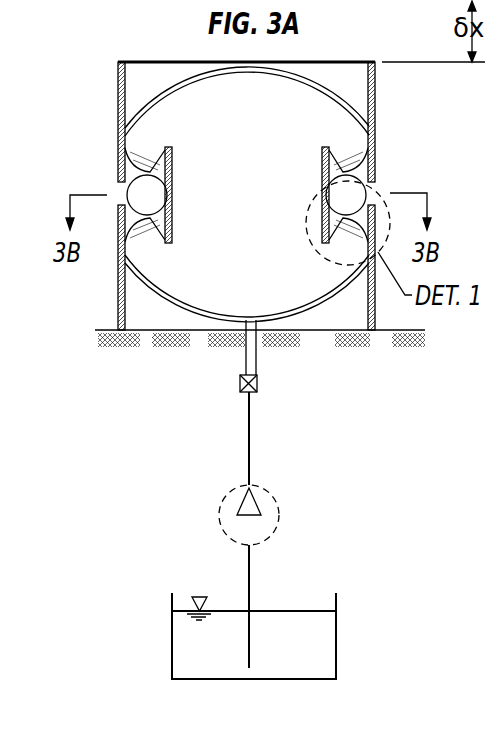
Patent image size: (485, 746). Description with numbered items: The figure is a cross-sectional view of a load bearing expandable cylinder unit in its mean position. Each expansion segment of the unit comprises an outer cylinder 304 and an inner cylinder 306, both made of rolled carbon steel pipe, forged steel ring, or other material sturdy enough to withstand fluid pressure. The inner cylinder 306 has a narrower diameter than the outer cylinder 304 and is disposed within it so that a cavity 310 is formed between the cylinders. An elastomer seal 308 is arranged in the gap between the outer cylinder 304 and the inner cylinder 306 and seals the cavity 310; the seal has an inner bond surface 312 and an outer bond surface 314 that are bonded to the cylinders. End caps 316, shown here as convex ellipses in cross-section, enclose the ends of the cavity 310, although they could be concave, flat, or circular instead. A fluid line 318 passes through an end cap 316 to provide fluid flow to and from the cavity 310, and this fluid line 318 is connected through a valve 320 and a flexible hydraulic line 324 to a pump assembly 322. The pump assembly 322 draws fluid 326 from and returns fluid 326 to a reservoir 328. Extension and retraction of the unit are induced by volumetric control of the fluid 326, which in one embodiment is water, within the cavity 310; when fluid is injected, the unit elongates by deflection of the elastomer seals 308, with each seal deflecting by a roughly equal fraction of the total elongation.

The outer cylinder 304 is at (120, 108).
The inner cylinder 306 is at (163, 198).
The elastomer seal 308 is at (127, 128).
The cavity 310 is at (148, 295).
The inner bond surface 312 is at (333, 147).
The outer bond surface 314 is at (365, 133).
The end cap 316 is at (170, 85).
The fluid line 318 is at (255, 348).
The valve 320 is at (258, 385).
The pump assembly 322 is at (281, 520).
The flexible hydraulic line 324 is at (250, 435).
The fluid 326 is at (268, 211).
The reservoir 328 is at (307, 680).